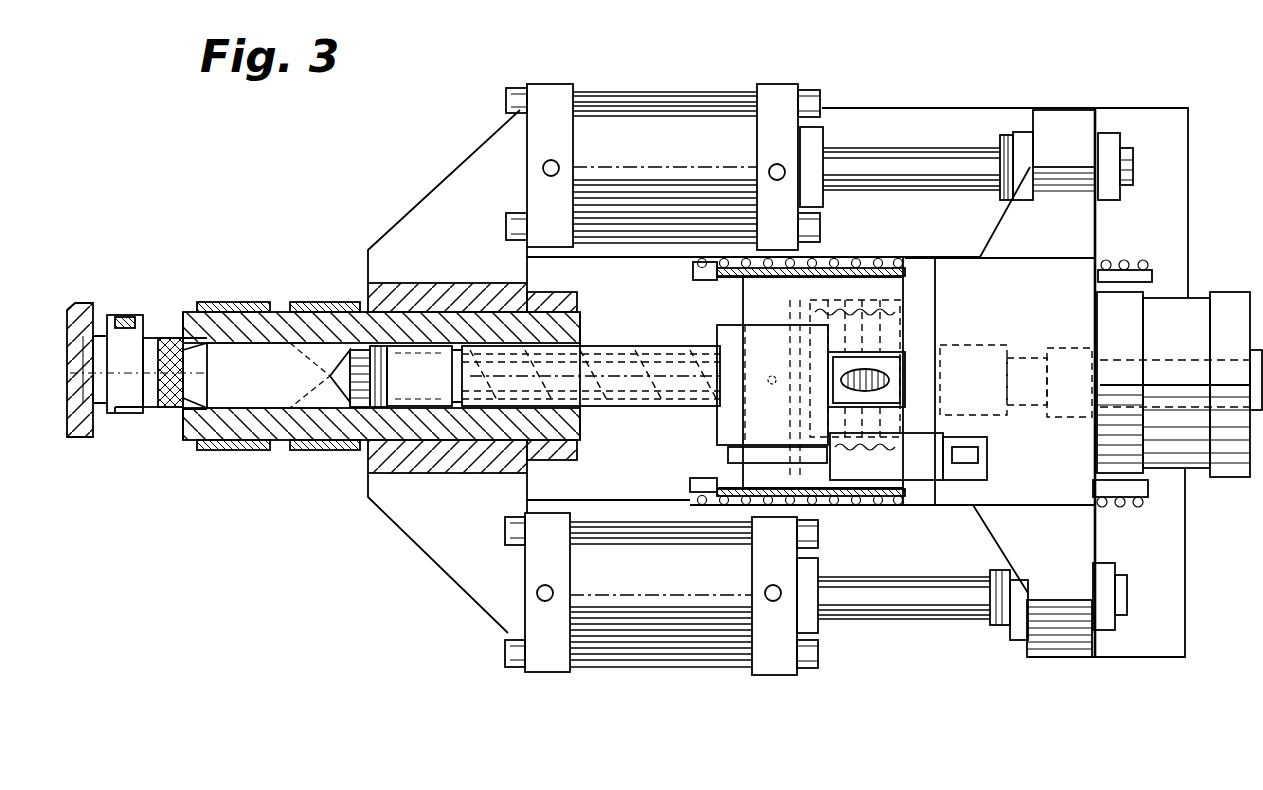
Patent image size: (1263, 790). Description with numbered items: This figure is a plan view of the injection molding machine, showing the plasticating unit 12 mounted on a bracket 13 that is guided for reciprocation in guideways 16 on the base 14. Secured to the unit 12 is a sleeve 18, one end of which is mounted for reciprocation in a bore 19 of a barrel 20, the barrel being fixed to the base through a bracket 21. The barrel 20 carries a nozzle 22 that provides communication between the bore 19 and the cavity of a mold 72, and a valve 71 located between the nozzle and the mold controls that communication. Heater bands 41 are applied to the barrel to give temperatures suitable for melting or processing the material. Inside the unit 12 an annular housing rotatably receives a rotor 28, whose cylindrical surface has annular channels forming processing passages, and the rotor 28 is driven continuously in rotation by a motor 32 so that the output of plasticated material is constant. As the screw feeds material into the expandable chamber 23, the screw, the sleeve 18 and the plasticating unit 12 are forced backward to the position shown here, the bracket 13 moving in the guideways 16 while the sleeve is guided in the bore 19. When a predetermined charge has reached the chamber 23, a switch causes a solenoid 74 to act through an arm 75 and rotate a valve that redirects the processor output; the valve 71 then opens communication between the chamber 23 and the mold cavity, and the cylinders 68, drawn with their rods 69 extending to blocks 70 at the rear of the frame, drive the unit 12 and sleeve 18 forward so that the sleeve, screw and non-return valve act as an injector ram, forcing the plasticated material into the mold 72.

The plasticating unit 12 is at (720, 296).
The bracket 13 is at (1025, 282).
The base 14 is at (483, 140).
The guideways 16 is at (1133, 262).
The sleeve 18 is at (647, 342).
The bore 19 is at (307, 347).
The barrel 20 is at (280, 310).
The bracket 21 is at (423, 282).
The nozzle 22 is at (160, 338).
The expandable chamber 23 is at (277, 398).
The rotor 28 is at (835, 300).
The motor 32 is at (1230, 283).
The heater bands 41 is at (220, 312).
The cylinders 68 is at (655, 127).
The piston rod 69 is at (880, 155).
The block 70 is at (1065, 120).
The valve 71 is at (123, 398).
The mold 72 is at (77, 303).
The solenoid 74 is at (990, 457).
The arm 75 is at (740, 452).